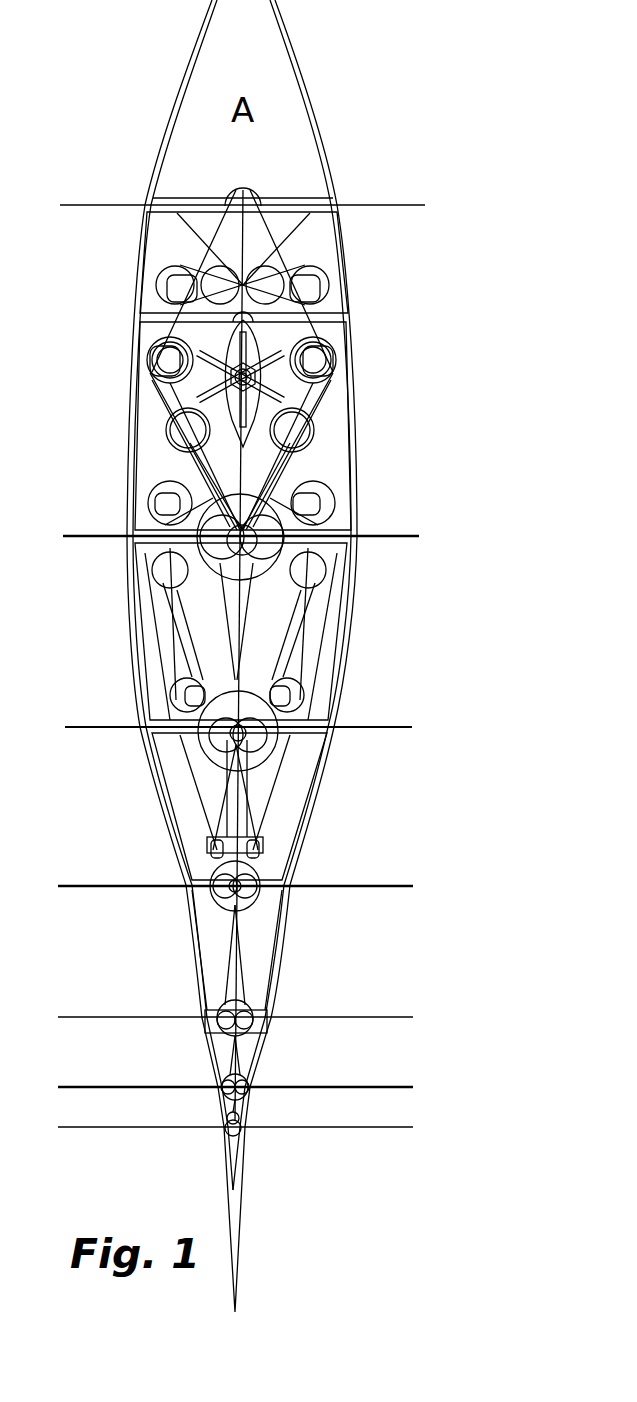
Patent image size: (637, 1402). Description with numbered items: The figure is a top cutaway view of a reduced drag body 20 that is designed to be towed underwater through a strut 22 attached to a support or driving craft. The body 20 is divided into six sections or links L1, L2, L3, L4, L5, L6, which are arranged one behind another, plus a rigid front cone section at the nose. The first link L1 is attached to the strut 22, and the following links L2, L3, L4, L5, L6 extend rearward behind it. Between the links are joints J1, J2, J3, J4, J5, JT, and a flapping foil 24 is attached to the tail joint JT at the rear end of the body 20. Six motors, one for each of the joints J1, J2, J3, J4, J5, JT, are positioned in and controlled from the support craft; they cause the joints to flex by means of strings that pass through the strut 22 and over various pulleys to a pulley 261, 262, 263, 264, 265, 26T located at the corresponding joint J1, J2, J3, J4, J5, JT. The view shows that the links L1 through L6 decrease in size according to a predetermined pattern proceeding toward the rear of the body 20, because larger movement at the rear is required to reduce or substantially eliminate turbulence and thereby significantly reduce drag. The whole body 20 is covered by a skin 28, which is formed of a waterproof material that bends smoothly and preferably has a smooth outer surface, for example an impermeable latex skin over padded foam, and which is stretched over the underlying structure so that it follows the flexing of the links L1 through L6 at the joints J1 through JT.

The body 20 is at (470, 392).
The strut 22 is at (268, 432).
The flapping foil 24 is at (248, 1230).
The skin 28 is at (131, 462).
The pulley 261 is at (226, 572).
The pulley 262 is at (258, 752).
The pulley 263 is at (214, 902).
The pulley 264 is at (250, 1010).
The pulley 265 is at (250, 1073).
The pulley 26T is at (223, 1136).
The link L1 is at (100, 298).
The link L2 is at (366, 628).
The link L3 is at (120, 802).
The link L4 is at (323, 912).
The link L5 is at (170, 1055).
The link L6 is at (265, 1104).
The joint J1 is at (227, 540).
The joint J2 is at (222, 727).
The joint J3 is at (219, 889).
The joint J4 is at (220, 1017).
The joint J5 is at (219, 1087).
The joint JT is at (219, 1133).